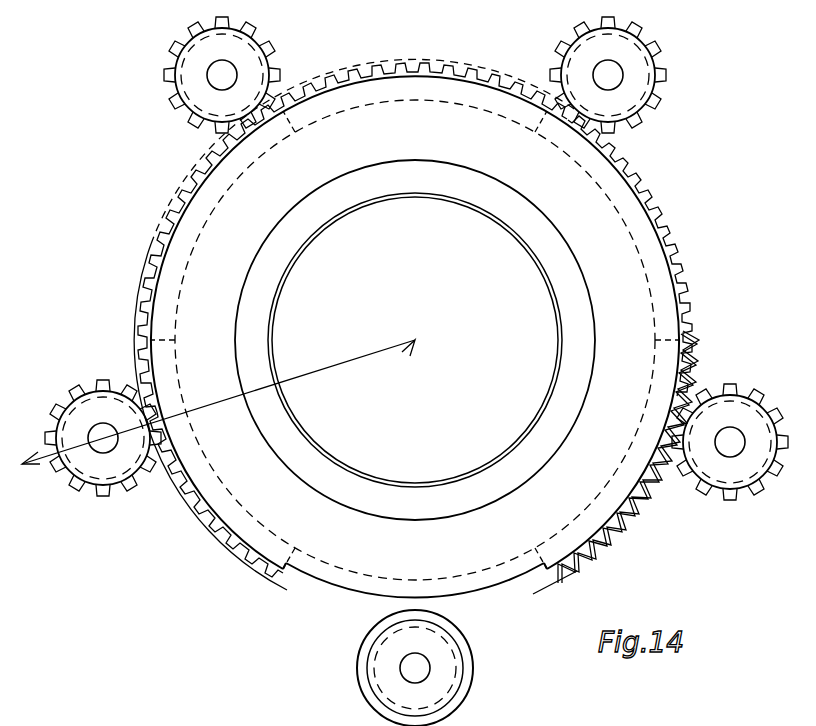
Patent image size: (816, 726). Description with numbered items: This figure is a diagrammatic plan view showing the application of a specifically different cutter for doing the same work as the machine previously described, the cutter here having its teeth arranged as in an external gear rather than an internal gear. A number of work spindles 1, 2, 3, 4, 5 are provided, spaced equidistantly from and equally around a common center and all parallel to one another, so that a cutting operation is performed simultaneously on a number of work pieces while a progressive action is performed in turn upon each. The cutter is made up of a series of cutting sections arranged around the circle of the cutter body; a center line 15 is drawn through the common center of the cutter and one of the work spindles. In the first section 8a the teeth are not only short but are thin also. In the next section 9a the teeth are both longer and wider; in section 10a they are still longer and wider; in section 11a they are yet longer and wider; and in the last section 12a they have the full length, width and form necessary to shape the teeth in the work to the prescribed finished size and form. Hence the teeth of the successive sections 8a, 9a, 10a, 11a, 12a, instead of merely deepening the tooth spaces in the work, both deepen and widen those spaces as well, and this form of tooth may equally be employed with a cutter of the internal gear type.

The work spindle 1 is at (415, 668).
The work spindle 2 is at (103, 438).
The work spindle 3 is at (222, 75).
The work spindle 4 is at (608, 75).
The work spindle 5 is at (730, 442).
The cutter section 8a is at (203, 505).
The cutter section 9a is at (172, 222).
The cutter section 10a is at (413, 73).
The cutter section 11a is at (648, 203).
The cutter section 12a is at (617, 535).
The center line / axis 15 is at (417, 344).